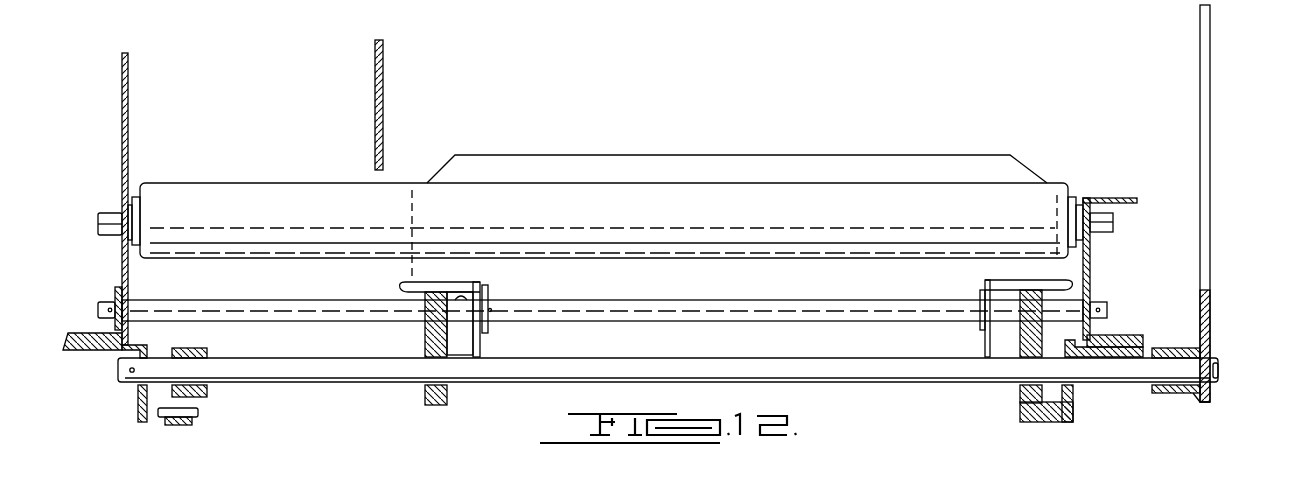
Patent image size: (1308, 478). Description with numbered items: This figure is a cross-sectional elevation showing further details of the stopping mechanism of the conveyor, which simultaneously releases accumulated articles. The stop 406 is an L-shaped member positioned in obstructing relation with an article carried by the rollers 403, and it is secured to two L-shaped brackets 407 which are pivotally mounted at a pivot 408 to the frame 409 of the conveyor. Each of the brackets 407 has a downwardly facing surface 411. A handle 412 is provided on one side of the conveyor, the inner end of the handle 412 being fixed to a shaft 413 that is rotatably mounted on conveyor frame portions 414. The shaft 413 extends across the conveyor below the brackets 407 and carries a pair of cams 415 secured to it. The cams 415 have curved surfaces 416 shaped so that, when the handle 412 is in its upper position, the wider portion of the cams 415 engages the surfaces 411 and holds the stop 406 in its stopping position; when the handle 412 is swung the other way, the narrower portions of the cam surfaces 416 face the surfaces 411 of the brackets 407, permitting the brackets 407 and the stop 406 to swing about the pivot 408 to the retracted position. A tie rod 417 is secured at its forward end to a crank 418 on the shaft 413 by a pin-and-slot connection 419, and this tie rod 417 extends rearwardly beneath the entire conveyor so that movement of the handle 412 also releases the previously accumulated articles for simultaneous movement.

The rollers 403 is at (243, 190).
The stop 406 is at (1000, 165).
The brackets 407 is at (478, 348).
The pivot 408 is at (327, 306).
The frame 409 is at (1090, 258).
The downwardly facing surfaces 411 is at (463, 288).
The handle 412 is at (1212, 40).
The shaft 413 is at (1138, 375).
The conveyor frame portions 414 is at (138, 400).
The cams 415 is at (427, 338).
The curved surfaces 416 is at (436, 286).
The tie rod 417 is at (185, 425).
The crank 418 is at (205, 398).
The pin-and-slot connection 419 is at (200, 412).